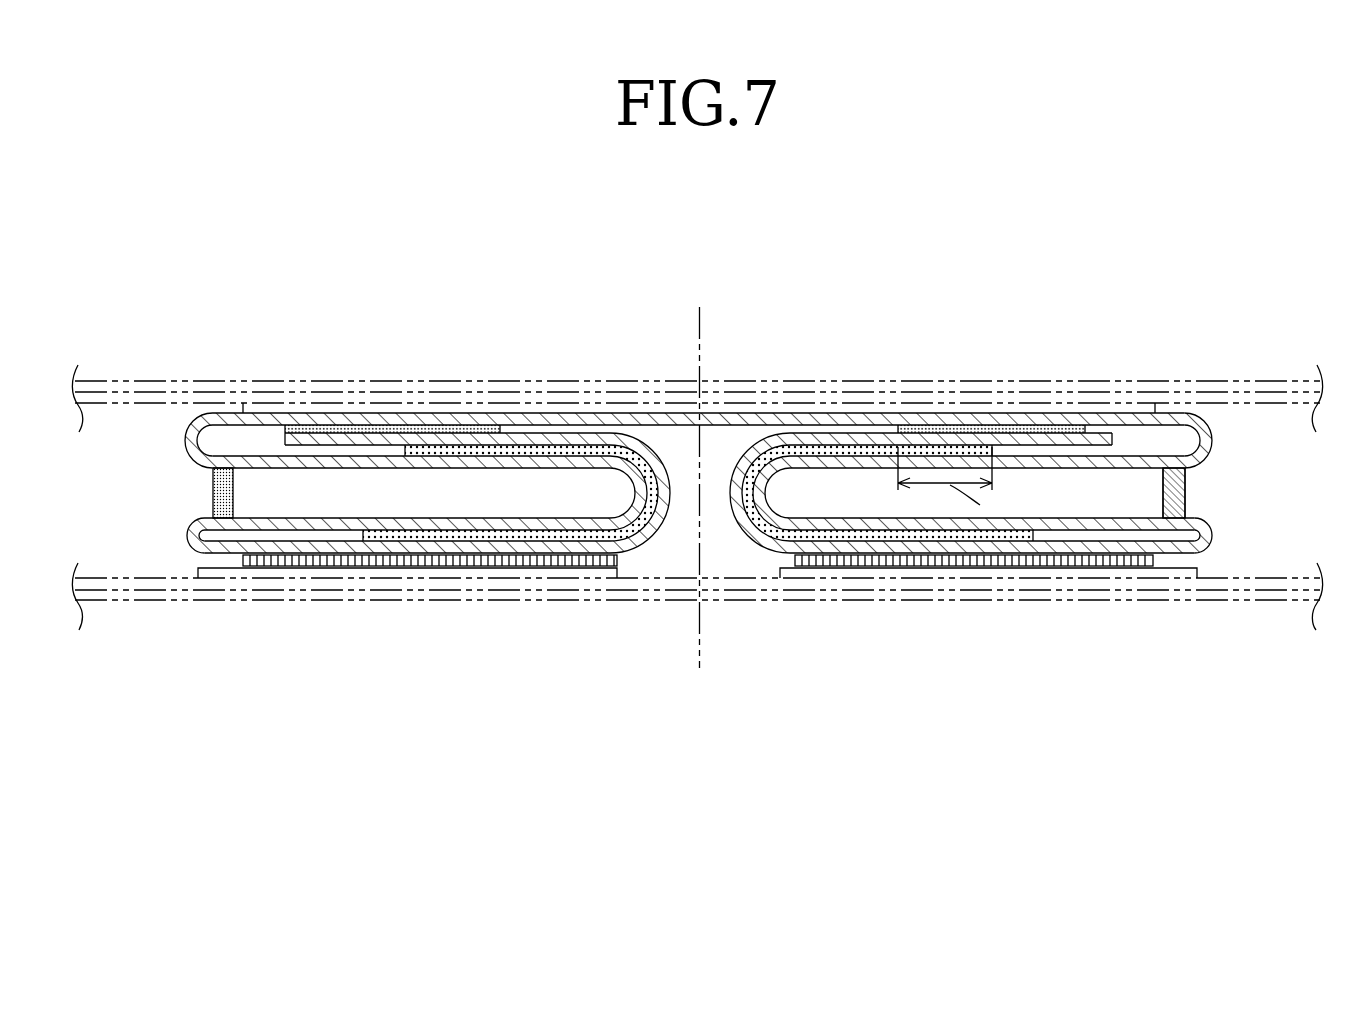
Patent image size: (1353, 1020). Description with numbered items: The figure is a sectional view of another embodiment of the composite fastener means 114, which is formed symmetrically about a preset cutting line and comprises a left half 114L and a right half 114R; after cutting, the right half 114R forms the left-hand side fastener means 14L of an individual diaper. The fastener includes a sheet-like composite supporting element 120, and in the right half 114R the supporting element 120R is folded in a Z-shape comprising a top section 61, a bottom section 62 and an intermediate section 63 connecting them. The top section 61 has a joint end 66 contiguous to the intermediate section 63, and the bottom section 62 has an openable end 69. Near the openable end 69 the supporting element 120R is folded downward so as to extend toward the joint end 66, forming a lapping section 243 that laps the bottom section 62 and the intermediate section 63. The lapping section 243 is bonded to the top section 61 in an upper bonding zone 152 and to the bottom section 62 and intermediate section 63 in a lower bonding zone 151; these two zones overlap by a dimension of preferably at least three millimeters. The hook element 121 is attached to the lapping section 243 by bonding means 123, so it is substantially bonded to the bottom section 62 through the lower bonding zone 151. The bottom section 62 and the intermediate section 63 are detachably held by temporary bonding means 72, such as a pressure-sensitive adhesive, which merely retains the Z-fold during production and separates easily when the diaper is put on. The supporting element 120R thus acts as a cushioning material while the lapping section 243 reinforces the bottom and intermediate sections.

The composite fastener means 114 is at (596, 248).
The left half 114L is at (252, 375).
The right half 114R is at (1145, 377).
The left-hand side fastener means 14L is at (1103, 487).
The top section 61 is at (790, 420).
The intermediate section 63 is at (803, 466).
The upper bonding zone 152 is at (970, 430).
The composite supporting element 120 is at (172, 444).
The supporting element 120R is at (1165, 517).
The temporary bonding means 72 is at (1163, 485).
The joint end 66 is at (1207, 438).
The openable end 69 is at (1198, 522).
The bottom section 62 is at (1112, 533).
The lapping section 243 is at (1068, 548).
The lower bonding zone 151 is at (813, 545).
The hook element 121 is at (875, 565).
The bonding means 123 is at (1137, 562).